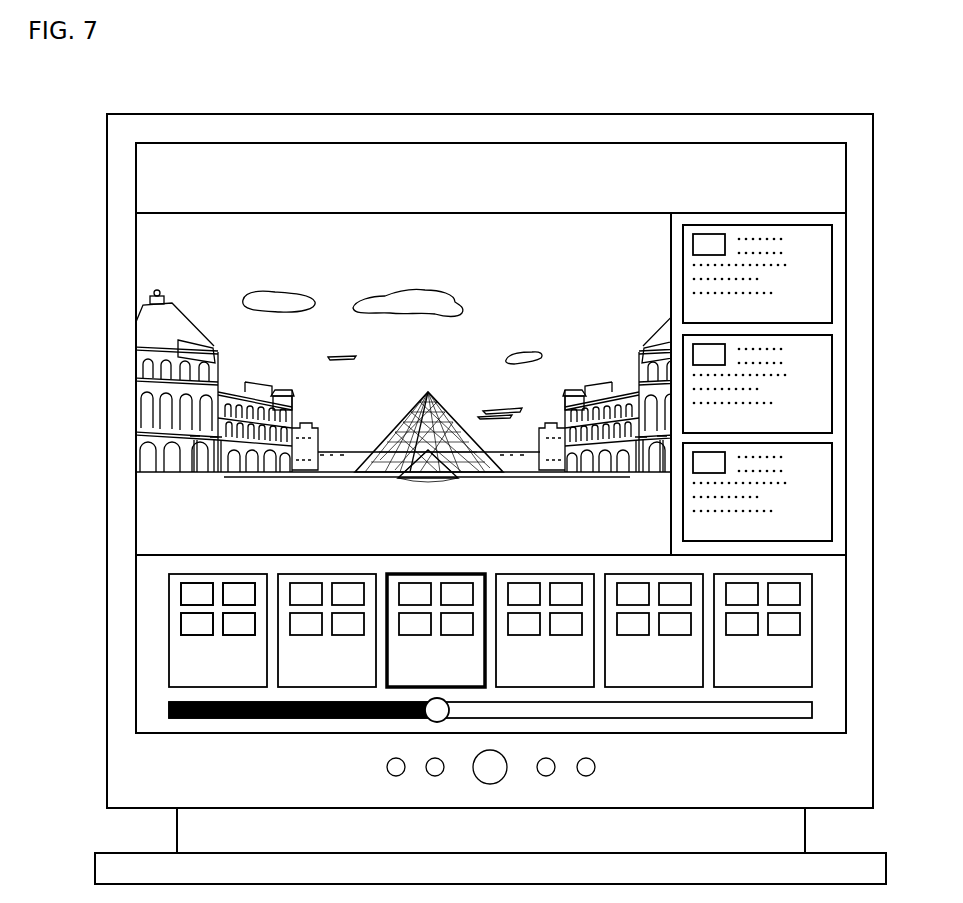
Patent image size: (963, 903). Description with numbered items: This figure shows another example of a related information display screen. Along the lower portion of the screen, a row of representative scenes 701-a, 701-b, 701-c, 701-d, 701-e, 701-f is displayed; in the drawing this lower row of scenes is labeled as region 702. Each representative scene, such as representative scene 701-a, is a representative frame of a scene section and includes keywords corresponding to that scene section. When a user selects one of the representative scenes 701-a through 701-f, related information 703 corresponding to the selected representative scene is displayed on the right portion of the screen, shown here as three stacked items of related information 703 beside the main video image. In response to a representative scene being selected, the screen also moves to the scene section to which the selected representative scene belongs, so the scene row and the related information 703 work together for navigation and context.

The representative scene 701-a is at (218, 630).
The representative scene 701-b is at (327, 630).
The representative scene 701-c is at (436, 630).
The representative scene 701-d is at (545, 630).
The representative scene 701-e is at (654, 630).
The representative scene 701-f is at (763, 630).
The thumbnail list area 702 is at (187, 623).
The related information 703 is at (757, 383).